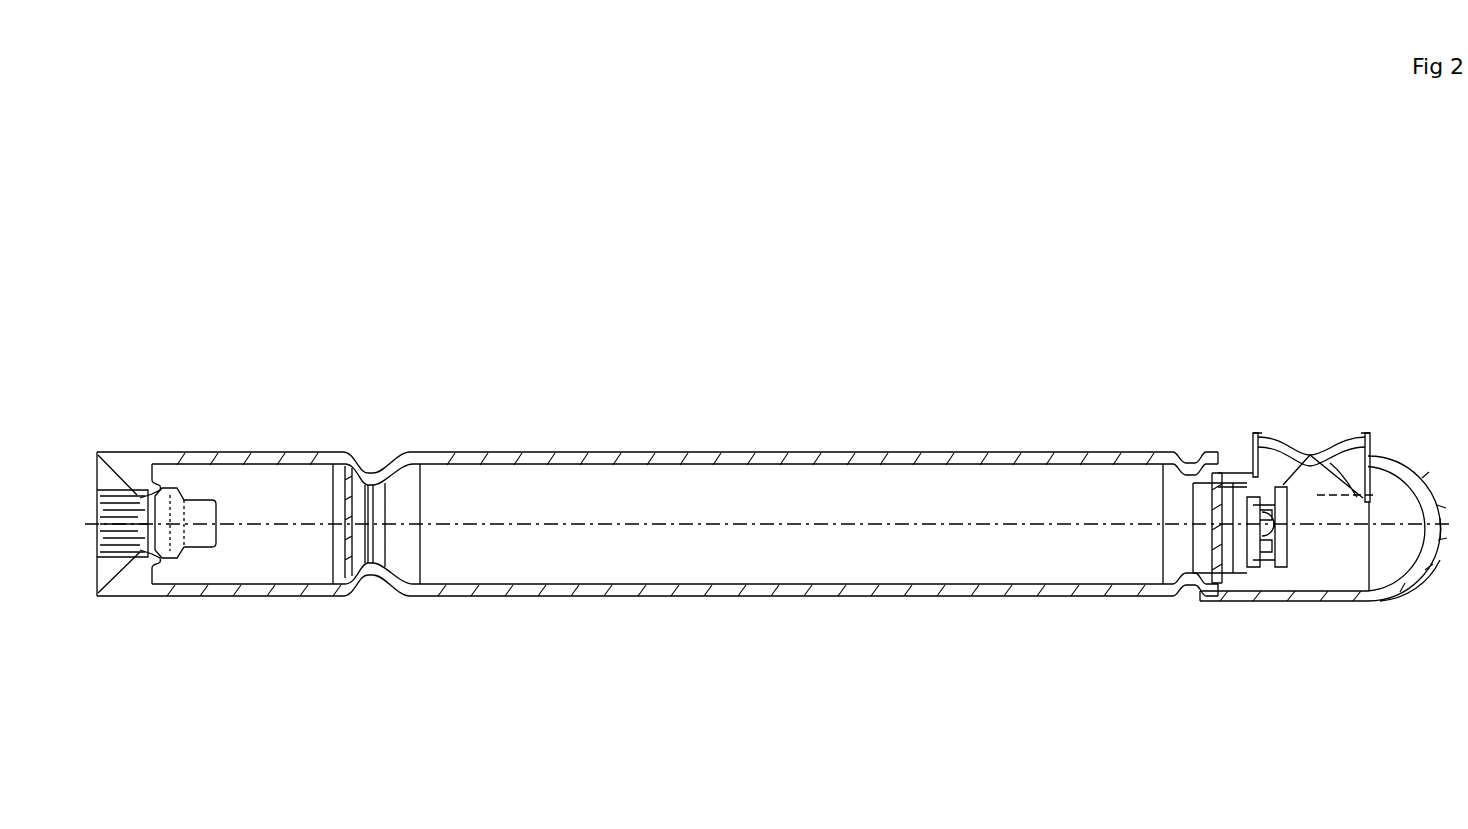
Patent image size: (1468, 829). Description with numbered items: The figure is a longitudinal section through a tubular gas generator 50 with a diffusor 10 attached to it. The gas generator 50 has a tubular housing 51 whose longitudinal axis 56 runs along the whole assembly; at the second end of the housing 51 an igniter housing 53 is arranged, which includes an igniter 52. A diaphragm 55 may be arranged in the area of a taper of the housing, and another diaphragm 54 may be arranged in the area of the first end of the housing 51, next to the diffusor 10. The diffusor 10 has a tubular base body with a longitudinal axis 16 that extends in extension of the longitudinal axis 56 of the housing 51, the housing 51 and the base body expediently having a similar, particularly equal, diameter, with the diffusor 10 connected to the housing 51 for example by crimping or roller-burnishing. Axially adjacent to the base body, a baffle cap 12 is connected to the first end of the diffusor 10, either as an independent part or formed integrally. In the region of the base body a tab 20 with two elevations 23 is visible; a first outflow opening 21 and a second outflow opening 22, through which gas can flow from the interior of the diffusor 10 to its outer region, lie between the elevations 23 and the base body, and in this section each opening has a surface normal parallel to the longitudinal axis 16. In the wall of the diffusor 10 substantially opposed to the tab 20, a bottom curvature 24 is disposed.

The diffusor 10 is at (1278, 602).
The baffle cap 12 is at (1437, 563).
The longitudinal axis 16 is at (1407, 527).
The tab 20 is at (1310, 457).
The first outflow opening 21 is at (1373, 445).
The second outflow opening 22 is at (1253, 448).
The elevations 23 is at (1271, 433).
The bottom curvature 24 is at (1372, 602).
The gas generator 50 is at (699, 662).
The tubular housing 51 is at (897, 597).
The igniter 52 is at (192, 545).
The igniter housing 53 is at (131, 467).
The diaphragm 54 is at (1273, 548).
The diaphragm 55 is at (378, 568).
The longitudinal axis 56 is at (795, 522).